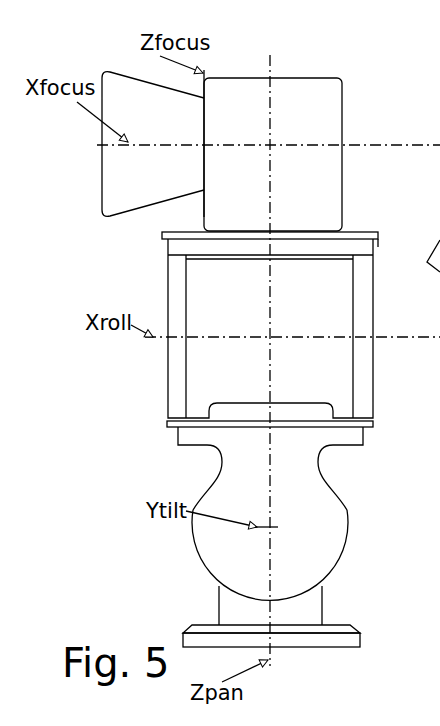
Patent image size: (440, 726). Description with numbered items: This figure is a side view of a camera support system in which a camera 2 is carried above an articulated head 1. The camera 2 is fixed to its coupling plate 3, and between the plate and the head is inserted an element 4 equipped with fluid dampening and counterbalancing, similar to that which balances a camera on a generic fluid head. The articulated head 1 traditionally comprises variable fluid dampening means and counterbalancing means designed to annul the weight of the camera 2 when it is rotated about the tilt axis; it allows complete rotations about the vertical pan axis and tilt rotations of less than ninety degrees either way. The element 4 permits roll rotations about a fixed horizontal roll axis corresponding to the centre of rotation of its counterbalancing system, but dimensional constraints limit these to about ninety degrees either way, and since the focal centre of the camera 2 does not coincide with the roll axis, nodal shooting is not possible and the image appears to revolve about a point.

The articulated head 1 is at (193, 548).
The camera 2 is at (101, 198).
The coupling plate 3 is at (162, 236).
The element equipped with fluid dampening and counterbalancing 4 is at (166, 386).